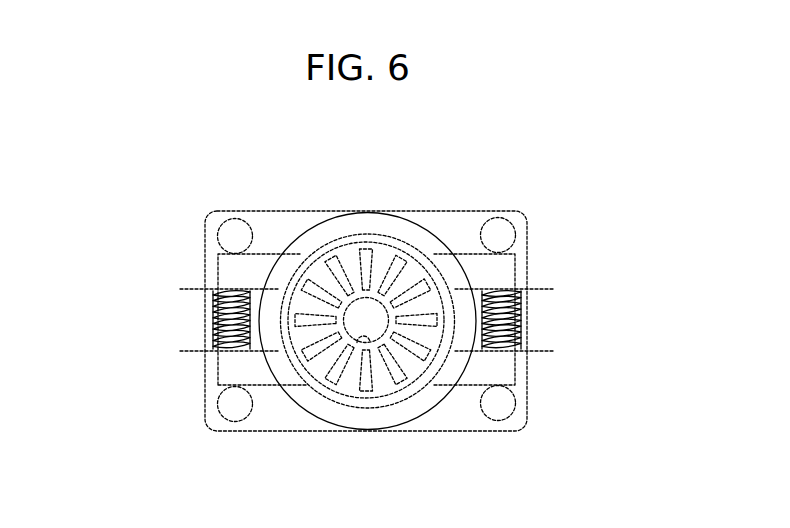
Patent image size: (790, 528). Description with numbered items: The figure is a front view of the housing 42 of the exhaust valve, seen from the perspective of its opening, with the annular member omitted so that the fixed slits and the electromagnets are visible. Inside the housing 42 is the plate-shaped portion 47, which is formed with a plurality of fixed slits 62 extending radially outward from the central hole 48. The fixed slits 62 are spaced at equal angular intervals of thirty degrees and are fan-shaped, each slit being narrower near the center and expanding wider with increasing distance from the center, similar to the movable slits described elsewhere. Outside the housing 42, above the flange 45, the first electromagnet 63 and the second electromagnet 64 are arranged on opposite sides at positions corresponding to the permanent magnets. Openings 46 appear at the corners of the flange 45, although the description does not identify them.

The housing 42 is at (443, 407).
The flange 45 is at (447, 223).
The mounting holes 46 is at (509, 240).
The plate-shaped portion 47 is at (347, 250).
The hole 48 is at (357, 340).
The fixed slits 62 is at (392, 383).
The first electromagnet 63 is at (520, 259).
The second electromagnet 64 is at (213, 376).